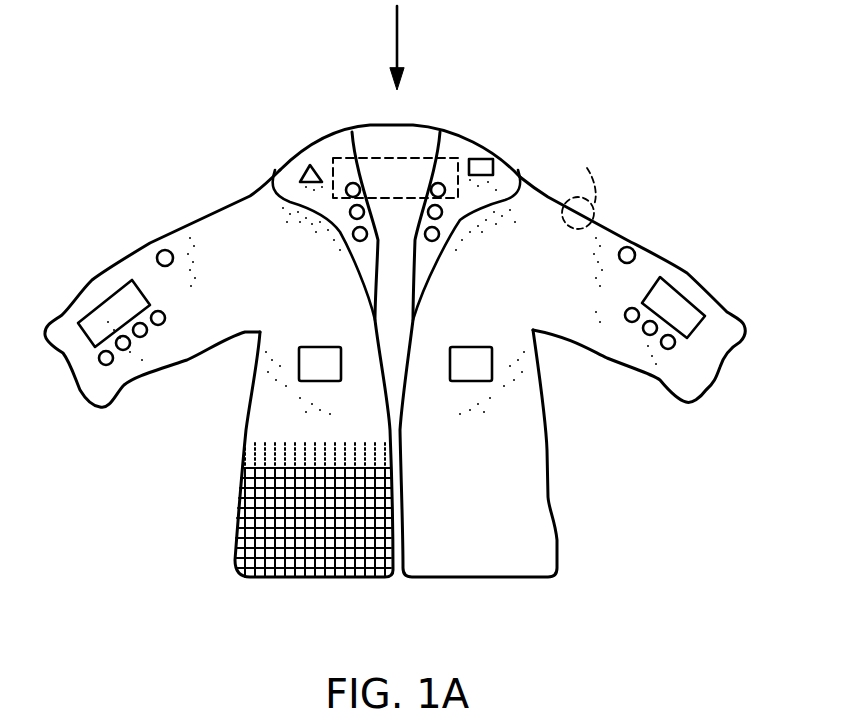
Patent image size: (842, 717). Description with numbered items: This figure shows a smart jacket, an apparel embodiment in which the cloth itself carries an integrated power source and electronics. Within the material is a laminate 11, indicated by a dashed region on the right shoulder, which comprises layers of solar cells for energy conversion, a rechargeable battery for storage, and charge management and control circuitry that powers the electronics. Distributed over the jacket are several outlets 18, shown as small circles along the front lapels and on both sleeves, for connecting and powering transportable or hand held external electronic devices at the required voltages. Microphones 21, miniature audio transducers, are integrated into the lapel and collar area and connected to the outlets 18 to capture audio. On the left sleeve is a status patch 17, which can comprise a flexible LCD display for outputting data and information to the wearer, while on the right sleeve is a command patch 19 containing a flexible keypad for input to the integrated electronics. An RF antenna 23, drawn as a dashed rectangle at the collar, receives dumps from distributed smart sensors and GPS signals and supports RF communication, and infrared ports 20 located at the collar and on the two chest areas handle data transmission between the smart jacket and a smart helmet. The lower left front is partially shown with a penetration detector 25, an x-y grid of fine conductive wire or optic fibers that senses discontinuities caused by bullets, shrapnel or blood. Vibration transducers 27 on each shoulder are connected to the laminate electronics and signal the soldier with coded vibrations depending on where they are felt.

The laminate 11 is at (590, 181).
The status patch 17 is at (100, 303).
The outlets 18 is at (346, 182).
The command patch 19 is at (678, 310).
The infrared ports 20 is at (479, 159).
The microphones 21 is at (302, 176).
The RF antenna 23 is at (395, 178).
The penetration detector 25 is at (273, 580).
The vibration transducers 27 is at (162, 252).